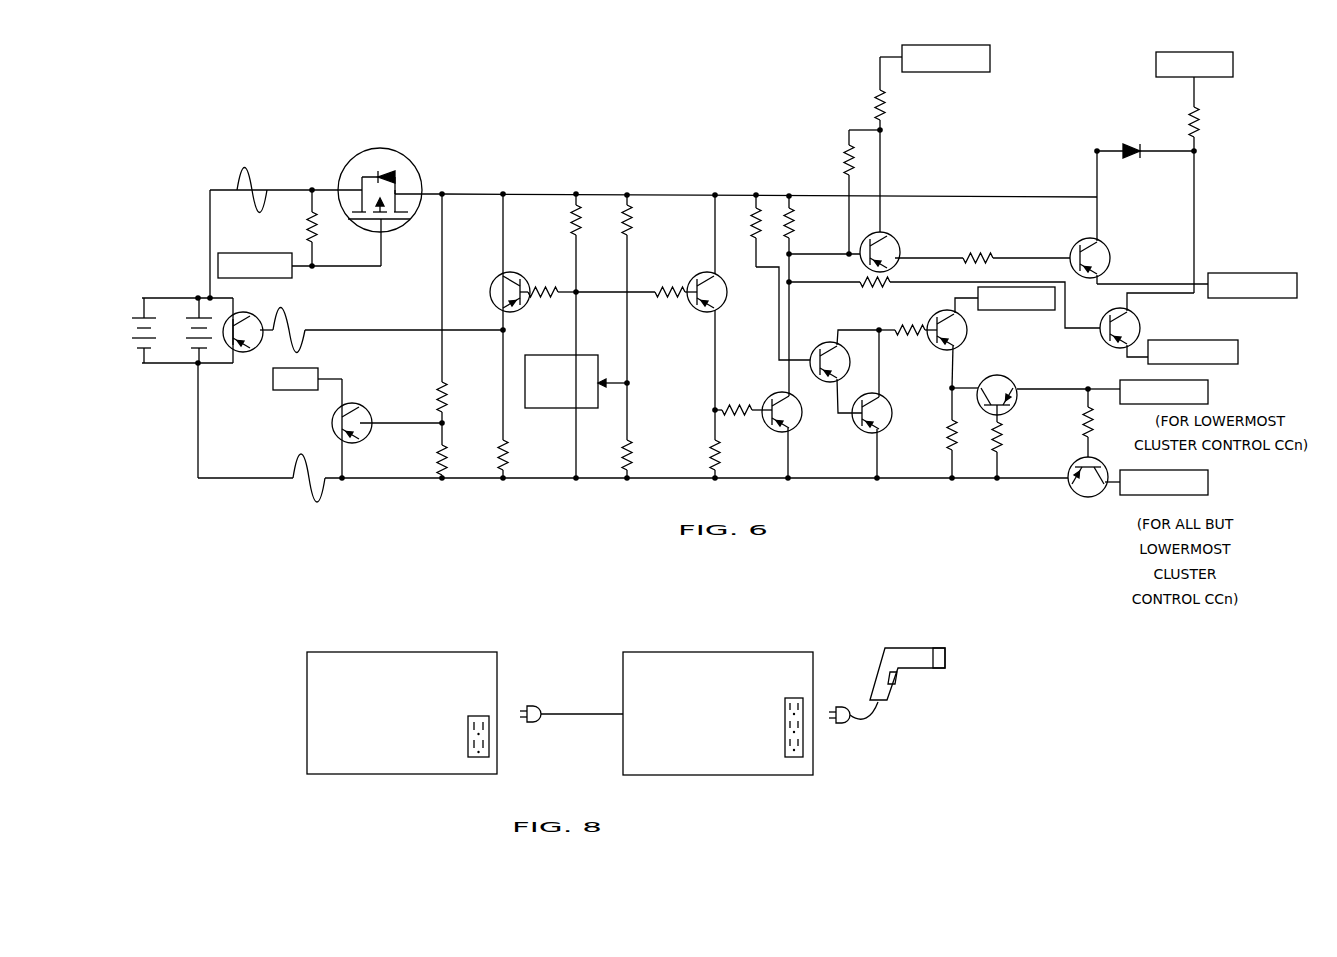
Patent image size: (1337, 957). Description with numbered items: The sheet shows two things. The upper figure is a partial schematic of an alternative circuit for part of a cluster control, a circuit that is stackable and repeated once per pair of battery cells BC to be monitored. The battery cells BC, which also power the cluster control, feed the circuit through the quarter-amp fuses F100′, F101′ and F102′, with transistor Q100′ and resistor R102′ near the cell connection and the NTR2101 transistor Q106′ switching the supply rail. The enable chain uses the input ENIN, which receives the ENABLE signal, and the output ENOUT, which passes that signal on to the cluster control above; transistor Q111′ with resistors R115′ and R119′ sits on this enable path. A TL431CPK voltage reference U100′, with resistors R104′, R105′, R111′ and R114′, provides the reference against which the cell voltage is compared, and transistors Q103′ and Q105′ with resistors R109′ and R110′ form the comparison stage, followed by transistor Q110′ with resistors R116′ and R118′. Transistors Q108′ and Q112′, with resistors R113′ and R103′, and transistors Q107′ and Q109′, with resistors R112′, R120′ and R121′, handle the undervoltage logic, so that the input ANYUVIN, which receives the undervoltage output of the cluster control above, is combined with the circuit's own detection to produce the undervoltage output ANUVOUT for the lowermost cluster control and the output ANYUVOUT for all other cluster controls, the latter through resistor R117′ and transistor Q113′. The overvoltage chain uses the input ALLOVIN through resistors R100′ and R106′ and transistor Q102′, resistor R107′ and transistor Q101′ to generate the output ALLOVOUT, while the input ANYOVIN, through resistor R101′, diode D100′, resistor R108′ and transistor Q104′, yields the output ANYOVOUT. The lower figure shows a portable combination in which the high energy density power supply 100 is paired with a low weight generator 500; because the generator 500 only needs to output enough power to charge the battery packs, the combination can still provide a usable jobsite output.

In FIG. 8, the generator 500 is at (397, 651).
In FIG. 8, the power supply 100 is at (709, 651).
In FIG. 6, the battery cells BC is at (182, 330).
In FIG. 6, the fuse F100′ is at (256, 180).
In FIG. 6, the fuse F101′ is at (389, 320).
In FIG. 6, the fuse F102′ is at (304, 467).
In FIG. 6, the transistor Q100′ is at (250, 341).
In FIG. 6, the transistor Q101′ is at (1139, 217).
In FIG. 6, the transistor Q102′ is at (876, 252).
In FIG. 6, the transistor Q103′ is at (526, 317).
In FIG. 6, the transistor Q104′ is at (1130, 330).
In FIG. 6, the transistor Q105′ is at (731, 317).
In FIG. 6, the transistor Q106′ is at (380, 179).
In FIG. 6, the transistor Q107′ is at (971, 350).
In FIG. 6, the transistor Q108′ is at (837, 366).
In FIG. 6, the transistor Q109′ is at (1021, 388).
In FIG. 6, the transistor Q110′ is at (800, 380).
In FIG. 6, the transistor Q111′ is at (388, 421).
In FIG. 6, the transistor Q112′ is at (890, 404).
In FIG. 6, the transistor Q113′ is at (1094, 491).
In FIG. 6, the resistor R100′ is at (906, 144).
In FIG. 6, the resistor R101′ is at (1222, 185).
In FIG. 6, the resistor R102′ is at (279, 229).
In FIG. 6, the resistor R103′ is at (812, 240).
In FIG. 6, the resistor R104′ is at (554, 336).
In FIG. 6, the resistor R105′ is at (649, 317).
In FIG. 6, the resistor R106′ is at (836, 192).
In FIG. 6, the resistor R107′ is at (1016, 246).
In FIG. 6, the resistor R108′ is at (944, 302).
In FIG. 6, the resistor R109′ is at (553, 305).
In FIG. 6, the resistor R110′ is at (636, 307).
In FIG. 6, the resistor R111′ is at (529, 458).
In FIG. 6, the resistor R112′ is at (906, 345).
In FIG. 6, the resistor R113′ is at (764, 277).
In FIG. 6, the resistor R114′ is at (607, 459).
In FIG. 6, the resistor R115′ is at (418, 319).
In FIG. 6, the resistor R116′ is at (742, 397).
In FIG. 6, the resistor R117′ is at (1116, 423).
In FIG. 6, the resistor R118′ is at (691, 459).
In FIG. 6, the resistor R119′ is at (418, 461).
In FIG. 6, the resistor R120′ is at (931, 433).
In FIG. 6, the resistor R121′ is at (1022, 450).
In FIG. 6, the diode D100′ is at (1145, 162).
In FIG. 6, the voltage reference U100′ is at (577, 395).
In FIG. 6, the enable output ENOUT is at (299, 248).
In FIG. 6, the enable input ENIN is at (307, 389).
In FIG. 6, the all-overvoltage input ALLOVIN is at (935, 58).
In FIG. 6, the any-overvoltage input ANYOVIN is at (1194, 64).
In FIG. 6, the all-overvoltage output ALLOVOUT is at (1252, 285).
In FIG. 6, the any-overvoltage output ANYOVOUT is at (1193, 352).
In FIG. 6, the any-undervoltage input ANYUVIN is at (1005, 300).
In FIG. 6, the undervoltage output ANUVOUT is at (1148, 392).
In FIG. 6, the any-undervoltage output ANYUVOUT is at (1164, 482).